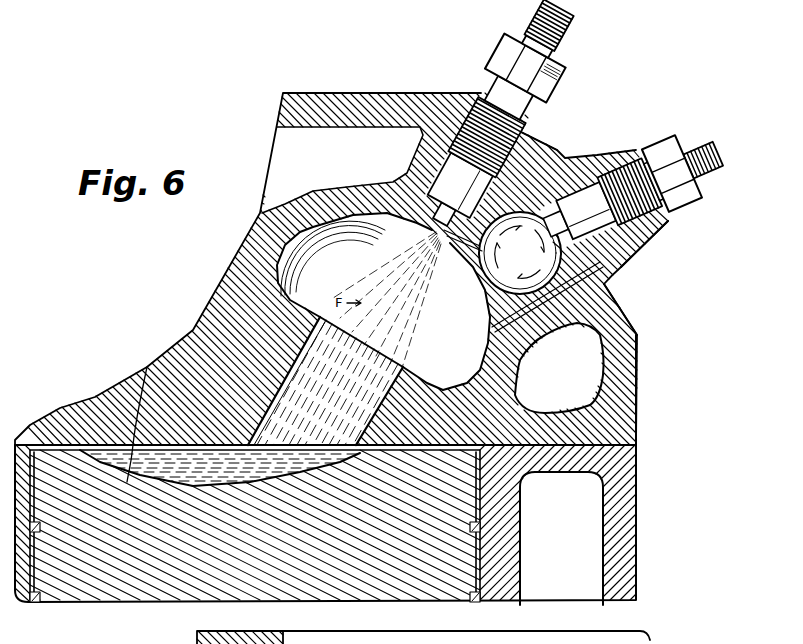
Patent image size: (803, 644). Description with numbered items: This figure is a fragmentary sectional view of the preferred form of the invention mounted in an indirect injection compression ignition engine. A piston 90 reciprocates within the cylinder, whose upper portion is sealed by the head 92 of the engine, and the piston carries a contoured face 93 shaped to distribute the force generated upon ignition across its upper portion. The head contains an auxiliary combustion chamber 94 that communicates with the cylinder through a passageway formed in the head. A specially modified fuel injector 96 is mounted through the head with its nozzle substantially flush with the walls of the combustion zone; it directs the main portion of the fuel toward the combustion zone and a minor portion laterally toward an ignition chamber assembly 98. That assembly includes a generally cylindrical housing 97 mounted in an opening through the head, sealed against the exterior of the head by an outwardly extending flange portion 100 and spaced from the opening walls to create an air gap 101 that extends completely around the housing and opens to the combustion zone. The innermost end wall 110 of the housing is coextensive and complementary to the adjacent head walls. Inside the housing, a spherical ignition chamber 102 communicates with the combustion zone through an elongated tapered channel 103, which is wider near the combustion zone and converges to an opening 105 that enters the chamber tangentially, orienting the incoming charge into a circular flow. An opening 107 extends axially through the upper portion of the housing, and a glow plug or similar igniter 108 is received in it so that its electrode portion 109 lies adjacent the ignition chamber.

The piston 90 is at (133, 590).
The head 92 is at (94, 396).
The contoured face 93 is at (147, 367).
The auxiliary combustion chamber 94 is at (357, 277).
The fuel injector 96 is at (497, 83).
The cylindrical housing 97 is at (606, 288).
The ignition chamber assembly 98 is at (634, 260).
The flange portion 100 is at (622, 268).
The air gap 101 is at (529, 305).
The ignition chamber 102 is at (535, 264).
The elongated tapered channel 103 is at (470, 262).
The opening 105 is at (548, 152).
The opening 107 is at (600, 165).
The glow plug or igniter 108 is at (659, 138).
The electrode portion 109 is at (571, 172).
The end wall 110 is at (488, 301).